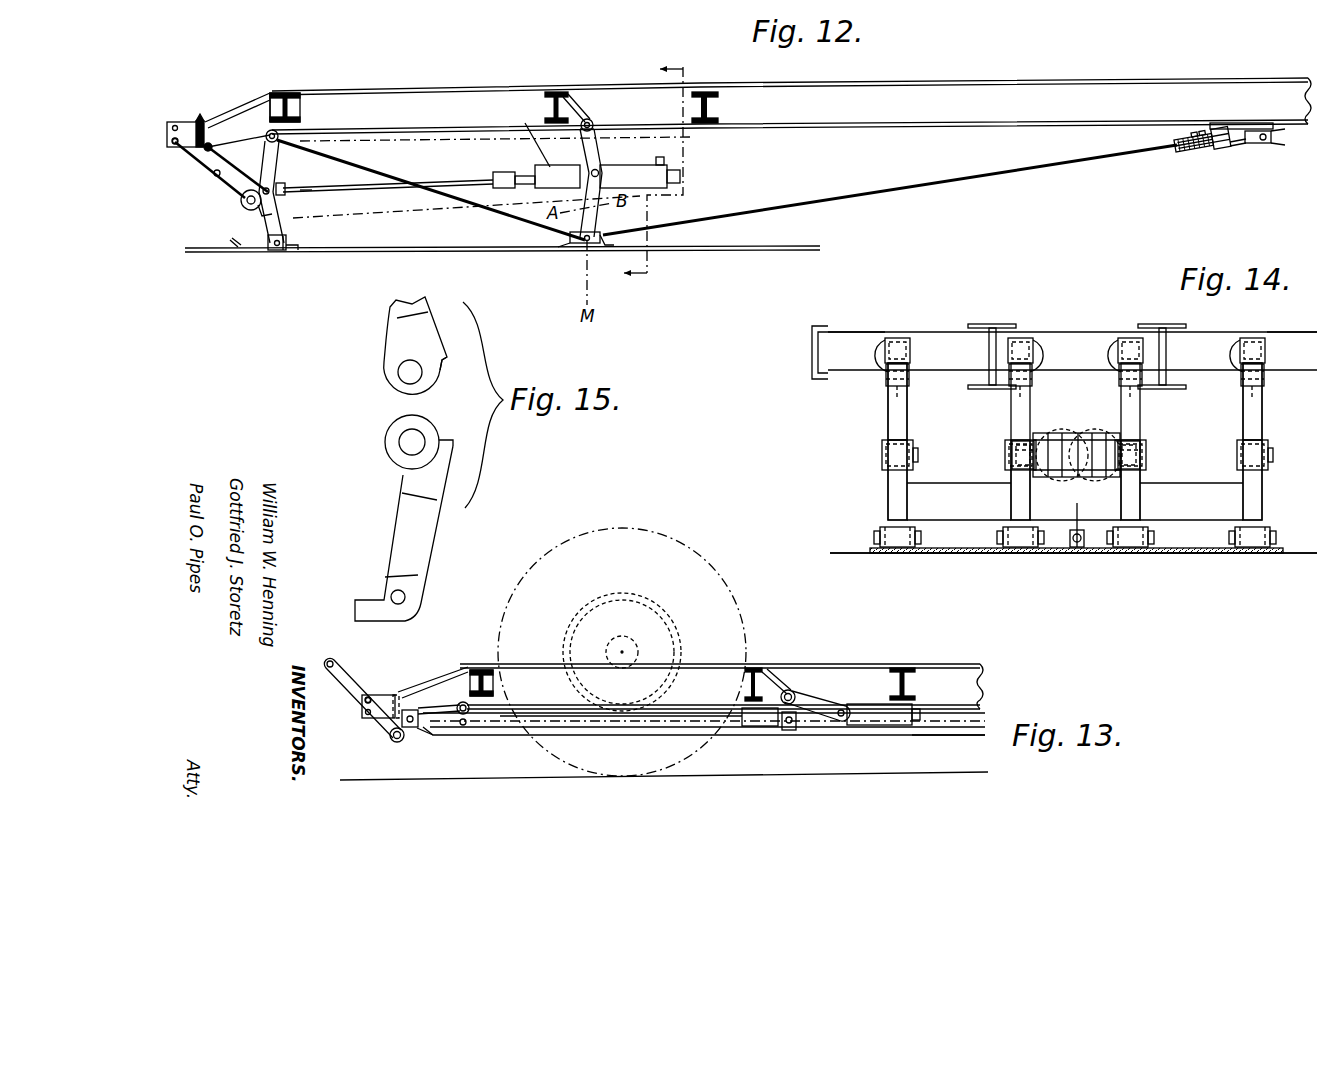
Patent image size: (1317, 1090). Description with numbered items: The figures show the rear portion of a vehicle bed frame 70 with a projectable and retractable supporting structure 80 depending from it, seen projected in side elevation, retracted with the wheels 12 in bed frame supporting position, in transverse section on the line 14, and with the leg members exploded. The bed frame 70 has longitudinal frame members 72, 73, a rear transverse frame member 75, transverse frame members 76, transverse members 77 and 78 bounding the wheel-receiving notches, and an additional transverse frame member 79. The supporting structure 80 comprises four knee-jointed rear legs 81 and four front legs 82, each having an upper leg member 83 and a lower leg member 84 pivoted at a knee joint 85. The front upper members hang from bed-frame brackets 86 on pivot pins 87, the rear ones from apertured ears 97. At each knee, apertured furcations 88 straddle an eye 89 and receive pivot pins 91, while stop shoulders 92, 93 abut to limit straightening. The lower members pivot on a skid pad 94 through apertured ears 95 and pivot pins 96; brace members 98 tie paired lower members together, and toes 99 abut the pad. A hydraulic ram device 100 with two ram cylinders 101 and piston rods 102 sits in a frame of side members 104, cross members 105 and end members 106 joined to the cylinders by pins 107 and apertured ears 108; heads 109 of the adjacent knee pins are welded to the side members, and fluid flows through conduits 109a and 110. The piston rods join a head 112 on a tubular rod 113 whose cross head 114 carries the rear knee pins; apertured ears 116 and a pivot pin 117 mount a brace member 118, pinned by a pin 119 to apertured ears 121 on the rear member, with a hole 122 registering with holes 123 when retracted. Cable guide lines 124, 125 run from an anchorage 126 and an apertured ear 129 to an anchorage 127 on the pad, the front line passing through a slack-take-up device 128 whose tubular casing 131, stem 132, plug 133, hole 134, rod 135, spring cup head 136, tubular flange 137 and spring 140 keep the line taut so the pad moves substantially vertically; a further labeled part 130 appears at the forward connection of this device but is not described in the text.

In FIG. 12, the wheels 12 is at (380, 222).
In FIG. 13, the wheels 12 is at (700, 545).
In FIG. 12, the section line 14— 14 is at (657, 169).
In FIG. 12, the vehicle bed frame 70 is at (881, 79).
In FIG. 13, the vehicle bed frame 70 is at (968, 661).
In FIG. 12, the longitudinally extending frame members 72 is at (990, 92).
In FIG. 14, the longitudinally extending frame members 72 is at (985, 322).
In FIG. 13, the longitudinally extending frame members 72 is at (982, 680).
In FIG. 14, the longitudinally extending frame members 73 is at (814, 325).
In FIG. 12, the transverse frame member 75 is at (245, 115).
In FIG. 13, the transverse frame member 75 is at (430, 695).
In FIG. 14, the transverse frame members 76 is at (1072, 343).
In FIG. 12, the transverse members 77 is at (290, 92).
In FIG. 13, the transverse members 77 is at (478, 668).
In FIG. 12, the transverse frame members 78 is at (550, 90).
In FIG. 14, the transverse frame members 78 is at (855, 331).
In FIG. 13, the transverse frame members 78 is at (756, 665).
In FIG. 12, the transverse frame member 79 is at (718, 95).
In FIG. 13, the transverse frame member 79 is at (920, 690).
In FIG. 12, the supporting structure 80 is at (266, 243).
In FIG. 12, the rear legs 81 is at (256, 173).
In FIG. 13, the rear legs 81 is at (452, 700).
In FIG. 12, the front legs 82 is at (604, 144).
In FIG. 14, the front legs 82 is at (886, 422).
In FIG. 13, the front legs 82 is at (830, 690).
In FIG. 12, the upper leg member 83 is at (274, 150).
In FIG. 14, the upper leg member 83 is at (887, 399).
In FIG. 15, the upper leg member 83 is at (397, 318).
In FIG. 12, the lower leg member 84 is at (232, 249).
In FIG. 14, the lower leg member 84 is at (887, 503).
In FIG. 15, the lower leg member 84 is at (405, 514).
In FIG. 12, the knee joint 85 is at (280, 198).
In FIG. 14, the knee joint 85 is at (880, 456).
In FIG. 12, the bed-frame brackets 86 is at (578, 100).
In FIG. 14, the bed-frame brackets 86 is at (884, 352).
In FIG. 13, the bed-frame brackets 86 is at (772, 672).
In FIG. 12, the pivot pins 87 is at (279, 136).
In FIG. 14, the pivot pins 87 is at (905, 395).
In FIG. 13, the pivot pins 87 is at (467, 728).
In FIG. 15, the apertured furcations 88 is at (382, 376).
In FIG. 15, the eye 89 is at (385, 443).
In FIG. 12, the pivot pins 91 is at (246, 201).
In FIG. 14, the pivot pins 91 is at (1012, 455).
In FIG. 13, the pivot pins 91 is at (844, 718).
In FIG. 15, the stop shoulder 92 is at (446, 370).
In FIG. 15, the stop shoulder 93 is at (452, 440).
In FIG. 12, the skid pad 94 is at (482, 252).
In FIG. 14, the skid pad 94 is at (1105, 554).
In FIG. 13, the skid pad 94 is at (607, 736).
In FIG. 12, the apertured ears 95 is at (288, 238).
In FIG. 14, the apertured ears 95 is at (888, 548).
In FIG. 13, the apertured ears 95 is at (796, 730).
In FIG. 12, the pivot pins 96 is at (275, 248).
In FIG. 14, the pivot pins 96 is at (922, 545).
In FIG. 12, the apertured ears 97 is at (270, 92).
In FIG. 14, the brace member 98 is at (942, 490).
In FIG. 12, the toes 99 is at (280, 251).
In FIG. 15, the toes 99 is at (365, 606).
In FIG. 12, the hydraulic ram device 100 is at (537, 166).
In FIG. 12, the ram cylinders 101 is at (655, 188).
In FIG. 13, the ram cylinders 101 is at (893, 726).
In FIG. 12, the piston rods 102 is at (522, 186).
In FIG. 14, the side members 104 is at (1115, 440).
In FIG. 14, the cross members 105 is at (1048, 440).
In FIG. 14, the end members 106 is at (1076, 440).
In FIG. 14, the pins 107 is at (1062, 430).
In FIG. 14, the apertured ears 108 is at (1098, 440).
In FIG. 14, the heads 109 is at (1012, 446).
In FIG. 12, the conduits 109a is at (521, 135).
In FIG. 12, the conduits 110 is at (665, 160).
In FIG. 12, the head 112 is at (497, 172).
In FIG. 12, the tubular rod 113 is at (436, 185).
In FIG. 13, the tubular rod 113 is at (696, 712).
In FIG. 12, the cross head 114 is at (306, 196).
In FIG. 12, the apertured ears 116 is at (260, 214).
In FIG. 13, the apertured ears 116 is at (398, 743).
In FIG. 12, the pivot pin 117 is at (245, 207).
In FIG. 13, the pivot pin 117 is at (400, 740).
In FIG. 12, the brace member 118 is at (205, 166).
In FIG. 13, the brace member 118 is at (345, 670).
In FIG. 12, the pin 119 is at (175, 145).
In FIG. 13, the pin 119 is at (383, 687).
In FIG. 12, the apertured ears 121 is at (200, 115).
In FIG. 13, the apertured ears 121 is at (380, 712).
In FIG. 12, the hole 122 is at (217, 177).
In FIG. 12, the holes 123 is at (178, 121).
In FIG. 13, the holes 123 is at (360, 700).
In FIG. 12, the rear cable guide line 124 is at (428, 208).
In FIG. 13, the rear cable guide line 124 is at (542, 718).
In FIG. 12, the front cable guide line 125 is at (880, 190).
In FIG. 14, the front cable guide line 125 is at (1095, 552).
In FIG. 13, the front cable guide line 125 is at (960, 736).
In FIG. 12, the anchorage 126 is at (212, 145).
In FIG. 14, the anchorage 127 is at (1076, 548).
In FIG. 12, the slack-take-up device 128 is at (1210, 154).
In FIG. 12, the apertured ear 129 is at (1270, 143).
In FIG. 12, the bracket 130 is at (1268, 137).
In FIG. 12, the tubular casing 131 is at (1240, 137).
In FIG. 12, the stem 132 is at (1256, 144).
In FIG. 12, the plug 133 is at (1176, 141).
In FIG. 12, the hole 134 is at (1184, 154).
In FIG. 12, the rod 135 is at (1172, 150).
In FIG. 12, the spring cup head 136 is at (1225, 154).
In FIG. 12, the tubular flange 137 is at (1190, 135).
In FIG. 12, the spring 140 is at (1201, 135).